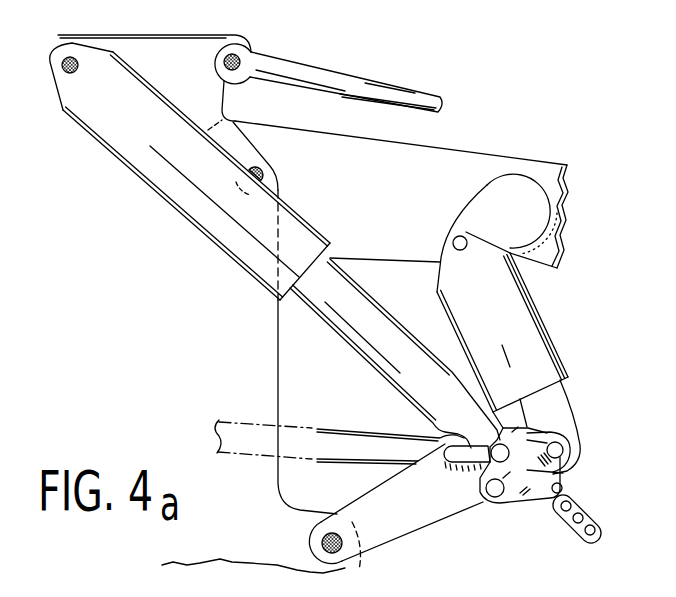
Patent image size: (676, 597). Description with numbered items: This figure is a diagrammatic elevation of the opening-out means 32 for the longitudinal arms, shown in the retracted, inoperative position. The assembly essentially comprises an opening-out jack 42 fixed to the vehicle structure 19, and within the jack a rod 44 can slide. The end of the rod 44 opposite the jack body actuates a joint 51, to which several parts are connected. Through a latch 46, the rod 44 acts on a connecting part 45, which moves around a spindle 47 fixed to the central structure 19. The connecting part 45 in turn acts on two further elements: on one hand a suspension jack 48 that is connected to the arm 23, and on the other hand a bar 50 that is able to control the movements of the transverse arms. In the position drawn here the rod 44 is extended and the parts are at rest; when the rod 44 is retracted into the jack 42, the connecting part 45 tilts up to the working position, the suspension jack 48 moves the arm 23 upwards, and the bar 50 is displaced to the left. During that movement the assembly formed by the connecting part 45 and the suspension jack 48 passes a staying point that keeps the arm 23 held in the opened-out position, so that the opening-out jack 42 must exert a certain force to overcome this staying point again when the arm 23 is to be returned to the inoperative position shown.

The vehicle structure 19 is at (178, 60).
The arm 23 is at (478, 158).
The opening-out means 32 is at (241, 338).
The opening-out jack 42 is at (190, 210).
The rod 44 is at (375, 350).
The connecting part 45 is at (443, 515).
The latch 46 is at (572, 473).
The spindle 47 is at (320, 543).
The suspension jack 48 is at (535, 337).
The bar 50 is at (328, 460).
The joint 51 is at (557, 518).